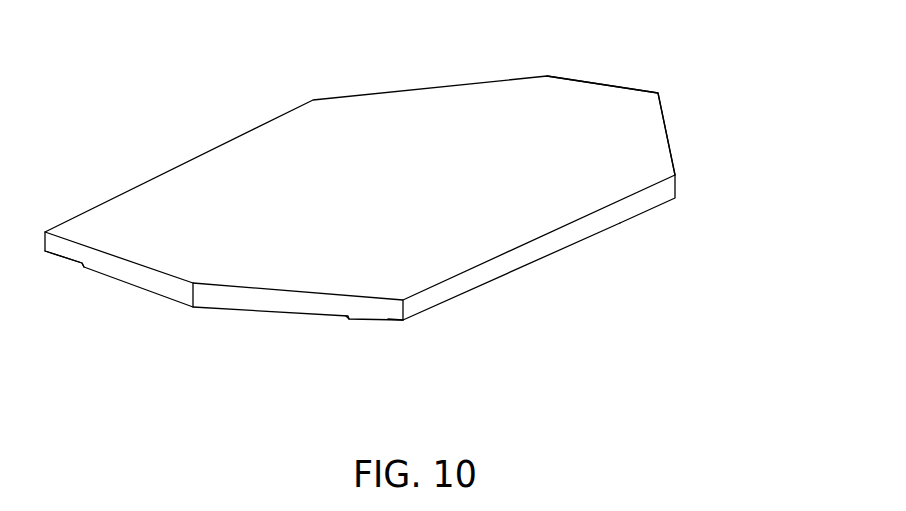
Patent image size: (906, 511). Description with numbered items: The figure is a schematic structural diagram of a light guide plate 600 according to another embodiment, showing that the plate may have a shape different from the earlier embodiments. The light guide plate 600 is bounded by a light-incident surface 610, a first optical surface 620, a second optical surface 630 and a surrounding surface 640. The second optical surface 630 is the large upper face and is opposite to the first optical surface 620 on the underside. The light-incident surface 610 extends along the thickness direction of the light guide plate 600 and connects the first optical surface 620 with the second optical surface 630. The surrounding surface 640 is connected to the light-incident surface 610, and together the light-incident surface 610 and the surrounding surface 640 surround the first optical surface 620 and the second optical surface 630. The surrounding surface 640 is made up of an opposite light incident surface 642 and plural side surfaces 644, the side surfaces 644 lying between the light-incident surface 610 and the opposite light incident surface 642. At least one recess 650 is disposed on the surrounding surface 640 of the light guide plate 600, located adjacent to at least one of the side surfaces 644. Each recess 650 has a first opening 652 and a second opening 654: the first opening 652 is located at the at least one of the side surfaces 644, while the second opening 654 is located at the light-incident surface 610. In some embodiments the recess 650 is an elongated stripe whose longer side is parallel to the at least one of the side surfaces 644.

The light guide plate 600 is at (110, 76).
The light-incident surface 610 is at (150, 283).
The first optical surface 620 is at (268, 315).
The second optical surface 630 is at (358, 122).
The surrounding surface 640 is at (742, 47).
The opposite light incident surface 642 is at (610, 83).
The side surfaces 644 is at (623, 210).
The recess 650 is at (60, 258).
The first opening 652 is at (483, 290).
The second opening 654 is at (377, 322).